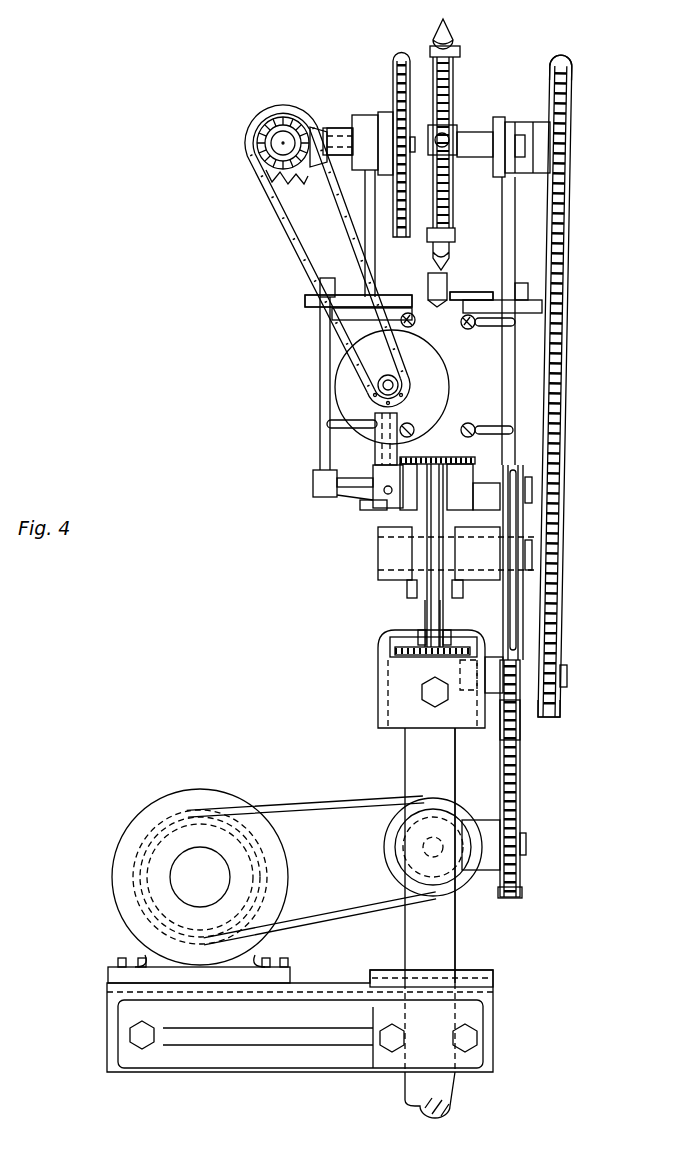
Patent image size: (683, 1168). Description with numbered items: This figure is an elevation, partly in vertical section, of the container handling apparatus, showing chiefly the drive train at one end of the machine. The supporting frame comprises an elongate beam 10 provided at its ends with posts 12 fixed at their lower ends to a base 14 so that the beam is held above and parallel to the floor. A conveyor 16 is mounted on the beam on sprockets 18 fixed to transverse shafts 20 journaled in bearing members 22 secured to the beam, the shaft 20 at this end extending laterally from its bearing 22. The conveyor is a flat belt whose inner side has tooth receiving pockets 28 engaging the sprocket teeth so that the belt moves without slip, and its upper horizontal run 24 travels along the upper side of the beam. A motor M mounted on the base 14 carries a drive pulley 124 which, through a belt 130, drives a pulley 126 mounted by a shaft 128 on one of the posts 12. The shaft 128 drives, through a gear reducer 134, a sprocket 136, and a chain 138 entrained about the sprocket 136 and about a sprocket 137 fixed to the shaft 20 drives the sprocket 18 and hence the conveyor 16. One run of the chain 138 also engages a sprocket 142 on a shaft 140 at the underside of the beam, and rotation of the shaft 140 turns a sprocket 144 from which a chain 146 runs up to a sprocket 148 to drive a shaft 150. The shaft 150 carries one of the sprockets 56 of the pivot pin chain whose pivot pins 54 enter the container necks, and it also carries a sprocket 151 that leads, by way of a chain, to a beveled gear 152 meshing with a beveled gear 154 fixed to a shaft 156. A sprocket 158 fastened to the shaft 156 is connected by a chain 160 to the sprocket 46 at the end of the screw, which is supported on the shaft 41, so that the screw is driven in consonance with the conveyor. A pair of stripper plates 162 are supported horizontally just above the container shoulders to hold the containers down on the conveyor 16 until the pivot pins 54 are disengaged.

The elongate beam 10 is at (372, 695).
The post 12 is at (410, 950).
The base 14 is at (487, 1040).
The conveyor 16 is at (487, 452).
The sprocket 18 is at (423, 604).
The shaft 20 is at (378, 560).
The bearing member 22 is at (393, 581).
The upper horizontal run 24 is at (422, 460).
The tooth receiving pocket 28 is at (425, 472).
The shaft 41 is at (373, 387).
The sprocket 46 is at (340, 367).
The pivot pin 54 is at (448, 40).
The sprocket 56 is at (453, 78).
The drive pulley 124 is at (157, 857).
The pulley 126 is at (385, 832).
The shaft 128 is at (427, 847).
The belt 130 is at (305, 803).
The gear reducer 134 is at (462, 940).
The sprocket 136 is at (518, 877).
The sprocket 137 is at (520, 617).
The chain 138 is at (516, 777).
The shaft 140 is at (567, 676).
The sprocket 142 is at (523, 723).
The sprocket 144 is at (560, 707).
The chain 146 is at (571, 230).
The sprocket 148 is at (573, 89).
The shaft 150 is at (475, 137).
The sprocket 151 is at (395, 56).
The beveled gear 152 is at (310, 110).
The beveled gear 154 is at (280, 110).
The shaft 156 is at (270, 146).
The sprocket 158 is at (268, 178).
The chain 160 is at (285, 242).
The stripper plate 162 is at (400, 291).
The motor M is at (158, 803).